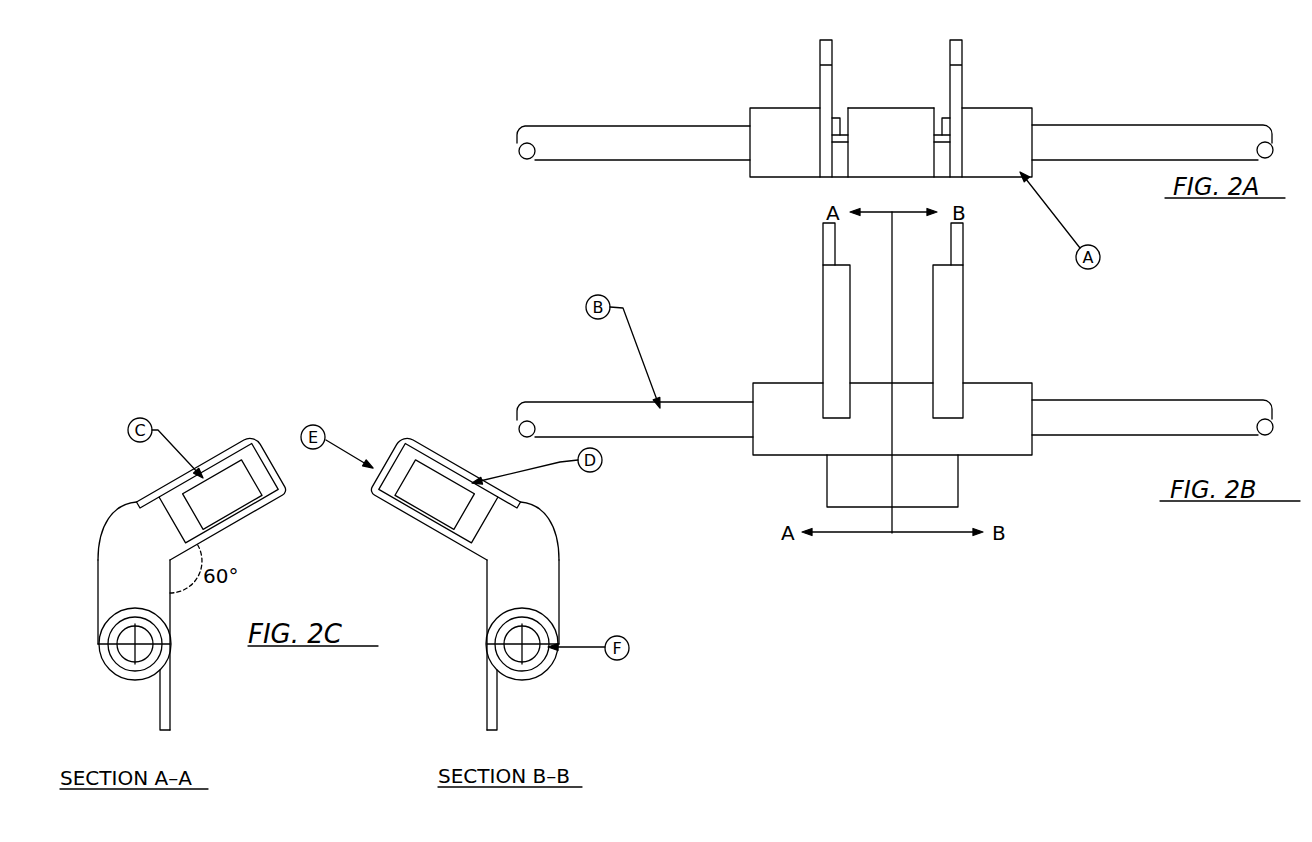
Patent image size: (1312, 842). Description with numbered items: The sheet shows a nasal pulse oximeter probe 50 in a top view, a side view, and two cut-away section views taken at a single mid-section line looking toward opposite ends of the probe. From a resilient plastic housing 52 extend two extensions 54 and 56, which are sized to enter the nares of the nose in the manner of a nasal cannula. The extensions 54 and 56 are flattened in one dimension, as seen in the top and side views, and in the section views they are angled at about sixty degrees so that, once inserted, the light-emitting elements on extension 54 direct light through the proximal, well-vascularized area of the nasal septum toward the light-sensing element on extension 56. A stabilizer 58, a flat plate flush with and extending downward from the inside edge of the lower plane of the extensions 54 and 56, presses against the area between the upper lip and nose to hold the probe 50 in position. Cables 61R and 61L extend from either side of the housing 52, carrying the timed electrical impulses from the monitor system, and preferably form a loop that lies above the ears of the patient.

In FIG. 2A, the pulse oximeter probe 50 is at (733, 92).
In FIG. 2B, the pulse oximeter probe 50 is at (720, 331).
In FIG. 2A, the resilient plastic housing 52 is at (797, 160).
In FIG. 2B, the resilient plastic housing 52 is at (789, 437).
In FIG. 2C, the resilient plastic housing 52 is at (130, 677).
In FIG. 2A, the extension 54 is at (823, 83).
In FIG. 2B, the extension 54 is at (820, 245).
In FIG. 2C, the extension 54 is at (106, 528).
In FIG. 2A, the extension 56 is at (962, 82).
In FIG. 2B, the extension 56 is at (963, 308).
In FIG. 2C, the extension 56 is at (551, 534).
In FIG. 2B, the stabilizer 58 is at (950, 488).
In FIG. 2C, the stabilizer 58 is at (173, 713).
In FIG. 2A, the cable 61R is at (603, 165).
In FIG. 2B, the cable 61R is at (635, 419).
In FIG. 2A, the cable 61L is at (1117, 117).
In FIG. 2B, the cable 61L is at (1152, 417).